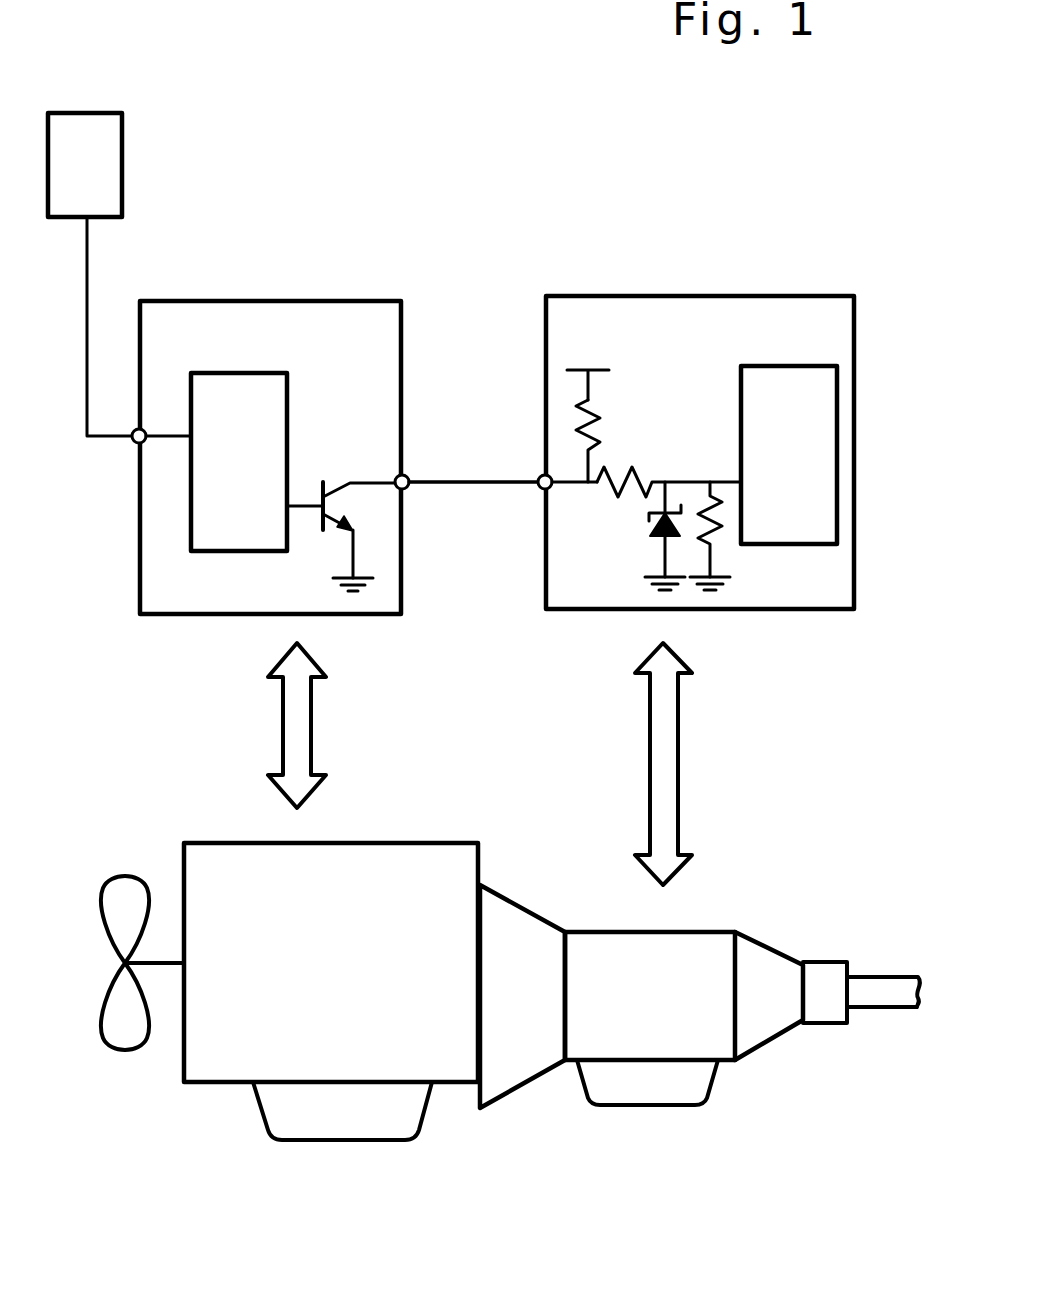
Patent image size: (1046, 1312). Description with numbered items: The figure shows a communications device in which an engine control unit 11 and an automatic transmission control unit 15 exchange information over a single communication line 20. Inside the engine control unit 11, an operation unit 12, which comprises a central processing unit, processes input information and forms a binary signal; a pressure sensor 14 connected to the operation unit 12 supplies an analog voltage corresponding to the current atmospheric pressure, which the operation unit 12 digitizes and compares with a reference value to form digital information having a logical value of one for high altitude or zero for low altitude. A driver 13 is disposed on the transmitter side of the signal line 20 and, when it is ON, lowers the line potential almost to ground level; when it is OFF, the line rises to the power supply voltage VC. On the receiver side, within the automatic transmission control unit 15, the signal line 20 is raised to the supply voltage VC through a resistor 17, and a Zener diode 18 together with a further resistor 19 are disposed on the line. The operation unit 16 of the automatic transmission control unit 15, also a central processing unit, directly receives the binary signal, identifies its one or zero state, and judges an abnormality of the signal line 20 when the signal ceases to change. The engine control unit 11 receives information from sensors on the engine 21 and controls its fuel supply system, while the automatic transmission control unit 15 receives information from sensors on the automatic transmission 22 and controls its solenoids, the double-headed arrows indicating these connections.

The engine control unit 11 is at (309, 299).
The operation unit 12 is at (288, 403).
The driver 13 is at (339, 487).
The pressure sensor 14 is at (124, 165).
The automatic transmission control unit 15 is at (686, 294).
The operation unit 16 is at (738, 386).
The resistor 17 is at (603, 434).
The Zener diode 18 is at (648, 527).
The resistor 19 is at (713, 532).
The communication line 20 is at (471, 479).
The engine 21 is at (364, 840).
The automatic transmission 22 is at (597, 931).